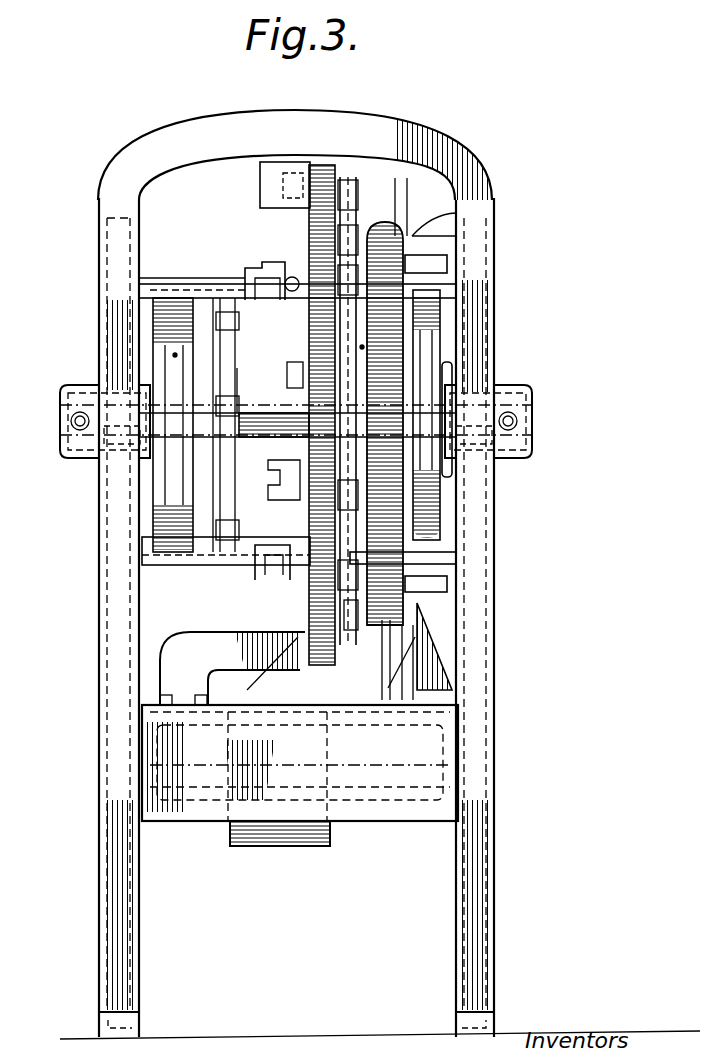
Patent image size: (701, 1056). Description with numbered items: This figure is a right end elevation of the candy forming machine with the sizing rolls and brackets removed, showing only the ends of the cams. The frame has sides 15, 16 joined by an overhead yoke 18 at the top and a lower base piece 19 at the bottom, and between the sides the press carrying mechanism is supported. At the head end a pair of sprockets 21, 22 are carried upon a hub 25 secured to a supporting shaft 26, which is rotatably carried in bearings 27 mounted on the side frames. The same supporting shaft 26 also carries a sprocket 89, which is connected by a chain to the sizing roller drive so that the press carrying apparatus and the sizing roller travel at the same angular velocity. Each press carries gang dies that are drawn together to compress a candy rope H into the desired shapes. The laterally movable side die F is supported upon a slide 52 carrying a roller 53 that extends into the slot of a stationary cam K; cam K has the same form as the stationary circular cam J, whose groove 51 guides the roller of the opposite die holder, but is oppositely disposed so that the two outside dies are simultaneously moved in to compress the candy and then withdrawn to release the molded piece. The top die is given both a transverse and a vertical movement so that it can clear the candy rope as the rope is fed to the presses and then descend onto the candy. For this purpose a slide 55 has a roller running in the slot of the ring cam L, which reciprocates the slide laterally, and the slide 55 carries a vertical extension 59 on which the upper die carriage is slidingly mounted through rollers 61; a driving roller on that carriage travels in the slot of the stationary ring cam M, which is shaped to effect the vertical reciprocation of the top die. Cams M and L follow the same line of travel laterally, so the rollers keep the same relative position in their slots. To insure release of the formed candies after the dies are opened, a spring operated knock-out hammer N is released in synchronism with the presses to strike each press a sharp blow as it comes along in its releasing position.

The frame side 15 is at (98, 577).
The frame side 16 is at (497, 531).
The overhead yoke 18 is at (418, 147).
The base piece 19 is at (453, 822).
The head sprocket 21 is at (237, 368).
The head sprocket 22 is at (362, 347).
The hub 25 is at (250, 414).
The supporting shaft 26 is at (205, 412).
The bearing 27 is at (73, 400).
The cam groove 51 is at (175, 355).
The slide 52 is at (177, 282).
The roller 53 is at (186, 286).
The slide 55 is at (430, 254).
The vertical extension 59 is at (345, 180).
The rollers 61 is at (352, 630).
The sprocket 89 is at (447, 372).
The side die F is at (275, 270).
The candy rope H is at (291, 277).
The circular cam J is at (430, 340).
The cam K is at (175, 338).
The ring cam L is at (383, 222).
The ring cam M is at (316, 168).
The hammer N is at (291, 362).